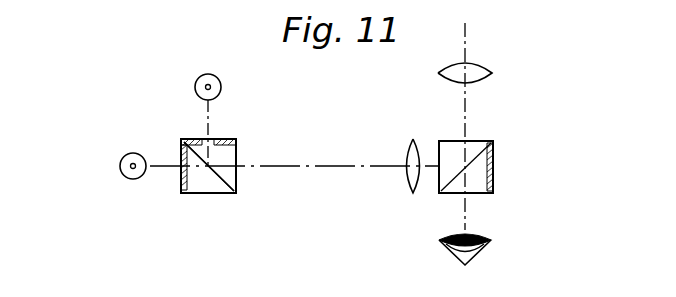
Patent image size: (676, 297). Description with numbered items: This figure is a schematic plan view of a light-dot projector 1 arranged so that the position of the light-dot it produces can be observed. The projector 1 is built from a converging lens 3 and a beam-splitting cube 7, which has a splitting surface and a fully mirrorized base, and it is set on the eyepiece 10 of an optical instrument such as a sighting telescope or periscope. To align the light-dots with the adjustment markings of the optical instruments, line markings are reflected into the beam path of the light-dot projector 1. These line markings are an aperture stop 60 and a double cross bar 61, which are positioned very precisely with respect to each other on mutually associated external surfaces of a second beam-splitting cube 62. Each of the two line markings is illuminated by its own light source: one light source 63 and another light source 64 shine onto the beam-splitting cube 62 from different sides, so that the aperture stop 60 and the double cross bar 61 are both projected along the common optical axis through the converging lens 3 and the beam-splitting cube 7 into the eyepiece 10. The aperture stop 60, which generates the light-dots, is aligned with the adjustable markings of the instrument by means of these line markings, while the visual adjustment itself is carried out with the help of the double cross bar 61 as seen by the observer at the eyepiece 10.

The light-dot projector 1 is at (516, 175).
The converging lens 3 is at (412, 178).
The beam-splitting cube 7 is at (477, 183).
The eyepiece 10 is at (476, 76).
The aperture stop 60 is at (222, 138).
The double cross bar 61 is at (179, 184).
The beam-splitting cube 62 is at (213, 183).
The light source 63 is at (119, 166).
The light source 64 is at (208, 74).